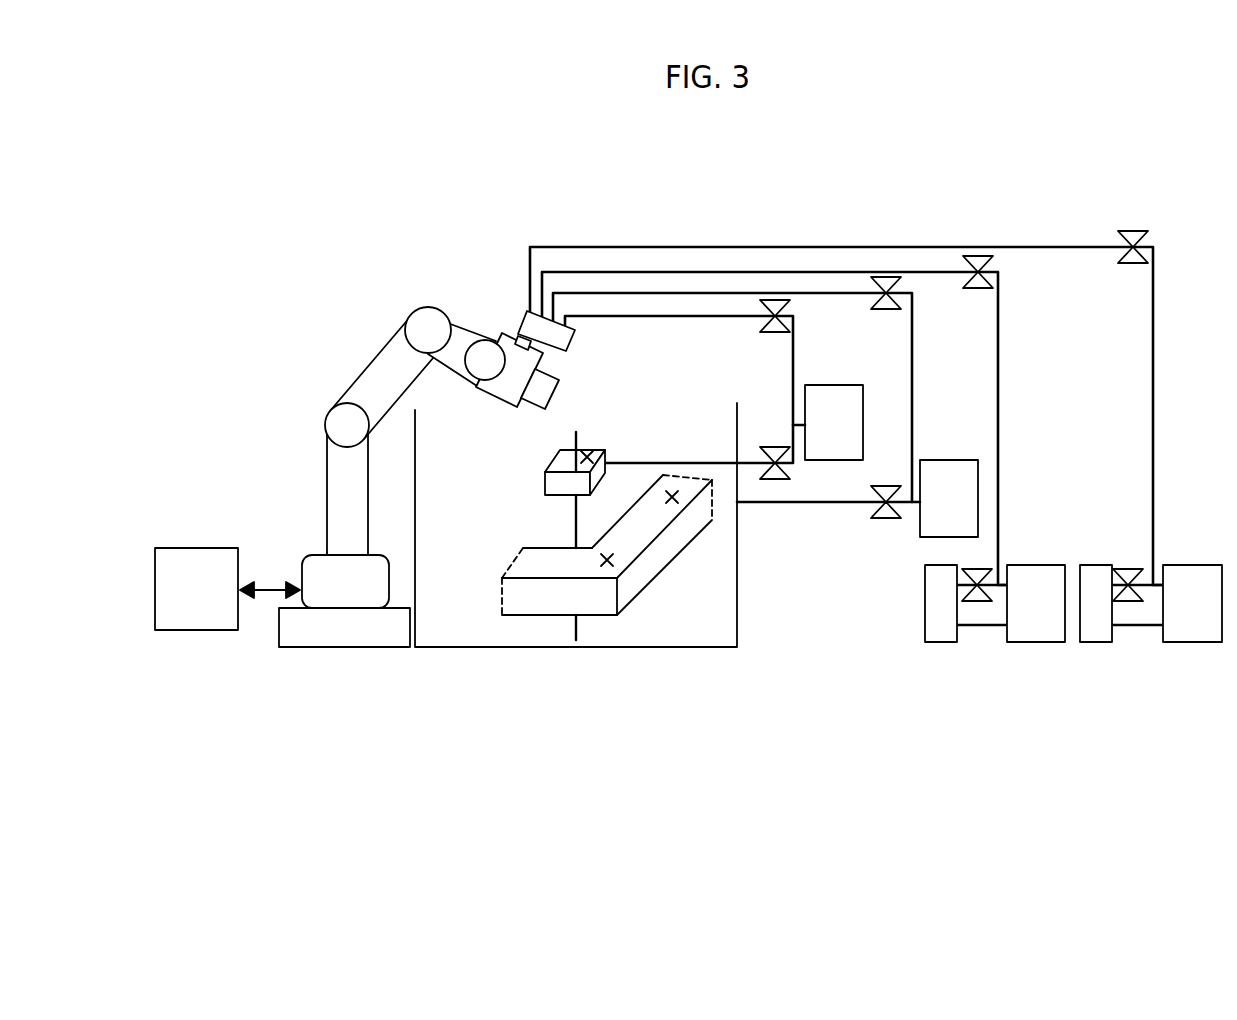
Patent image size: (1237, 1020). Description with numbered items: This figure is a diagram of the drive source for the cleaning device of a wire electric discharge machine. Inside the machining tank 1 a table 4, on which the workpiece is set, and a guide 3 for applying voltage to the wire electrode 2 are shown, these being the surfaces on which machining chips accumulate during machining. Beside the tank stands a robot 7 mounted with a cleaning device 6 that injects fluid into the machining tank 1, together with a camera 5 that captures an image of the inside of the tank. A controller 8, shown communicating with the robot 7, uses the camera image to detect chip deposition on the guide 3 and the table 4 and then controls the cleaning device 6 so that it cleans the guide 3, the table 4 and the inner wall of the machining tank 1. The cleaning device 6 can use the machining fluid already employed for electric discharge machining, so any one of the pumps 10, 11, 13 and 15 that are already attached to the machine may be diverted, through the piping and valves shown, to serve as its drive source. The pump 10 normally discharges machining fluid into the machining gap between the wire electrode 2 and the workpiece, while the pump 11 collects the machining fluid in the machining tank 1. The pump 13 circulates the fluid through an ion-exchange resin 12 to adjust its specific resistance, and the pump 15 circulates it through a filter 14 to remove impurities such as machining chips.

The machining tank 1 is at (740, 572).
The wire electrode 2 is at (574, 528).
The guide 3 is at (545, 480).
The table 4 is at (662, 578).
The camera 5 is at (557, 392).
The cleaning device 6 is at (578, 335).
The robot 7 is at (375, 553).
The controller 8 is at (192, 548).
The pump 10 is at (851, 377).
The pump 11 is at (953, 460).
The ion-exchange resin 12 is at (925, 582).
The pump 13 is at (1050, 565).
The filter 14 is at (1091, 565).
The pump 15 is at (1193, 565).